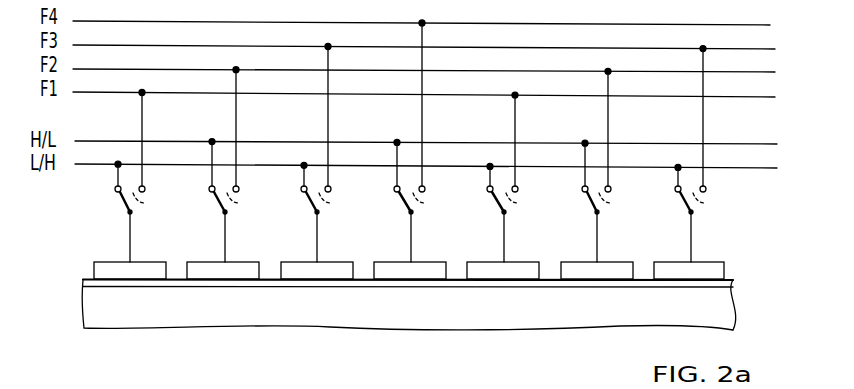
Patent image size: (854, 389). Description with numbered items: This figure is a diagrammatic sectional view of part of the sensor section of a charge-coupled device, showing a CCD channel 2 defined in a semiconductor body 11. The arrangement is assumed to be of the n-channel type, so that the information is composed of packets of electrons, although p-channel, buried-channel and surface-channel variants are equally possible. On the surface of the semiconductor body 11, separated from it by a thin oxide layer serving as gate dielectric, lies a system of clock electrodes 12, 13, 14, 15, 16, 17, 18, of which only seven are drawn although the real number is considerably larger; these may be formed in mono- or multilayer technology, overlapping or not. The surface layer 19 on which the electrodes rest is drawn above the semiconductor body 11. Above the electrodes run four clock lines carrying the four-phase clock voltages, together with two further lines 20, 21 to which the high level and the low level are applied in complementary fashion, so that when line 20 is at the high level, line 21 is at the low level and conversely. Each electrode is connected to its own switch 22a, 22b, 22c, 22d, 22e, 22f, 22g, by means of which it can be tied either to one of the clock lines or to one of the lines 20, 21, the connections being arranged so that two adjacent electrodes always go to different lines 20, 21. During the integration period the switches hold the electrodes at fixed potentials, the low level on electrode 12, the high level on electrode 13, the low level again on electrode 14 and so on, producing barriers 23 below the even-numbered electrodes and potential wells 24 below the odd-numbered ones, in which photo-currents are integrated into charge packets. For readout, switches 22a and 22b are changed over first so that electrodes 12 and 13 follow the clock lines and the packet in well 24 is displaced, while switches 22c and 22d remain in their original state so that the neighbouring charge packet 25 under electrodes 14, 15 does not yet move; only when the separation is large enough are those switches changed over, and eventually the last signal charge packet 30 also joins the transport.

The CCD channel 2 is at (92, 301).
The semiconductor body 11 is at (81, 333).
The clock electrode 12 is at (107, 268).
The clock electrode 13 is at (206, 268).
The clock electrode 14 is at (299, 268).
The clock electrode 15 is at (391, 268).
The clock electrode 16 is at (488, 268).
The clock electrode 17 is at (582, 268).
The clock electrode 18 is at (674, 268).
The conductive layer 19 is at (733, 283).
The line 20 is at (776, 128).
The line 21 is at (776, 170).
The switch 22a is at (145, 176).
The switch 22b is at (239, 164).
The switch 22c is at (331, 153).
The switch 22d is at (425, 141).
The switch 22e is at (518, 177).
The switch 22f is at (611, 165).
The switch 22g is at (705, 154).
The barrier 23 is at (129, 388).
The potential well 24 is at (238, 379).
The charge packet 25 is at (433, 379).
The signal charge packet 30 is at (608, 379).